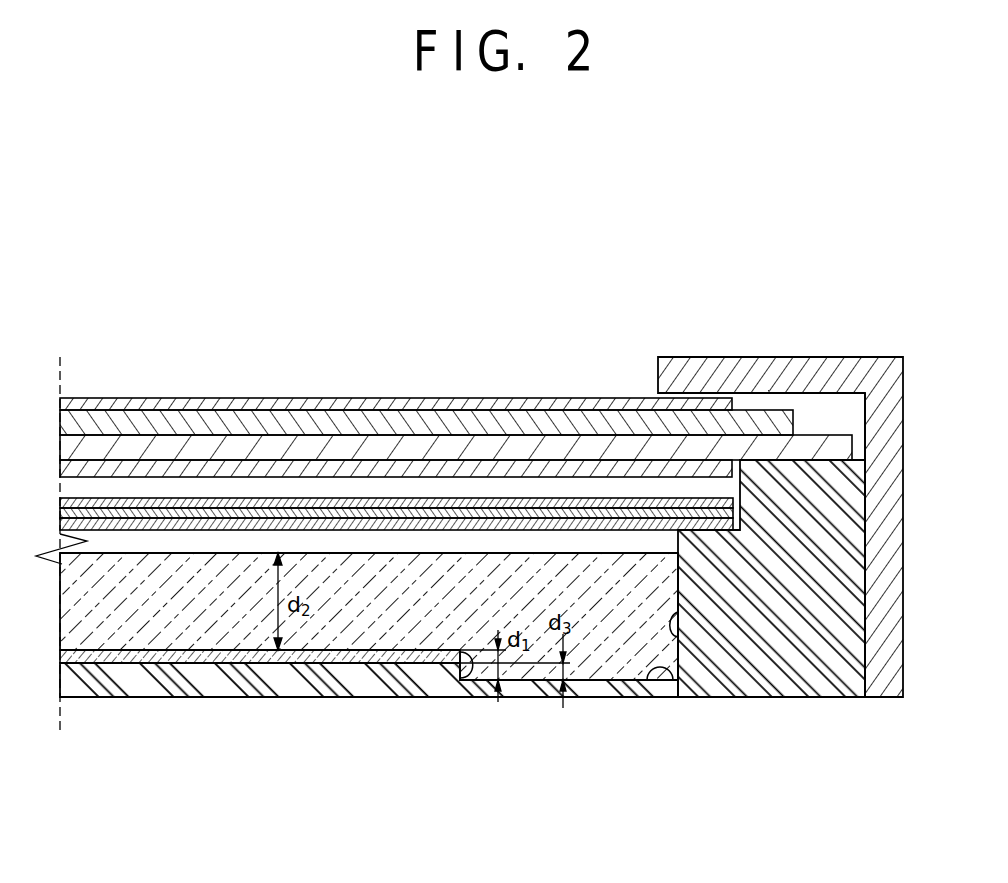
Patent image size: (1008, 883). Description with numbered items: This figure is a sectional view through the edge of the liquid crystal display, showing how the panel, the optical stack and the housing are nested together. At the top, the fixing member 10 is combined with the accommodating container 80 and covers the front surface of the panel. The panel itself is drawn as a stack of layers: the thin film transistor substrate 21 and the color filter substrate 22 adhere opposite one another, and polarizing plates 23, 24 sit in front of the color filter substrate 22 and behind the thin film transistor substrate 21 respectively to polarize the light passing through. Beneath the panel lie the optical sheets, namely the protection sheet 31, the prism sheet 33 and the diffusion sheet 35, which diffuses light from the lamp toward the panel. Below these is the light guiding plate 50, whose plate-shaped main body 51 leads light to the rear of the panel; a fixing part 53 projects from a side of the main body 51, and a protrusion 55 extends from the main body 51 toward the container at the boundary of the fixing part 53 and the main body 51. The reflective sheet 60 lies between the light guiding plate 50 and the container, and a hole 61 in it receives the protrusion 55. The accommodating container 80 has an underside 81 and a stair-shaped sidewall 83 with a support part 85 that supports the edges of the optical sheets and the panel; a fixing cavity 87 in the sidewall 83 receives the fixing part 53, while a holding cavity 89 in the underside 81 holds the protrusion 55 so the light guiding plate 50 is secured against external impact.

The fixing member 10 is at (752, 357).
The thin film transistor substrate 21 is at (422, 444).
The color filter substrate 22 is at (570, 416).
The polarizing plate 23 is at (500, 397).
The polarizing plate 24 is at (635, 471).
The protection sheet 31 is at (307, 499).
The prism sheet 33 is at (228, 511).
The diffusion sheet 35 is at (165, 517).
The light guiding plate 50 is at (549, 696).
The main body 51 is at (462, 677).
The fixing part 53 is at (603, 594).
The protrusion 55 is at (528, 677).
The reflective sheet 60 is at (280, 662).
The hole 61 is at (430, 635).
The accommodating container 80 is at (467, 616).
The underside 81 is at (148, 683).
The sidewall 83 is at (825, 577).
The support part 85 is at (730, 540).
The fixing cavity 87 is at (677, 614).
The holding cavity 89 is at (673, 677).